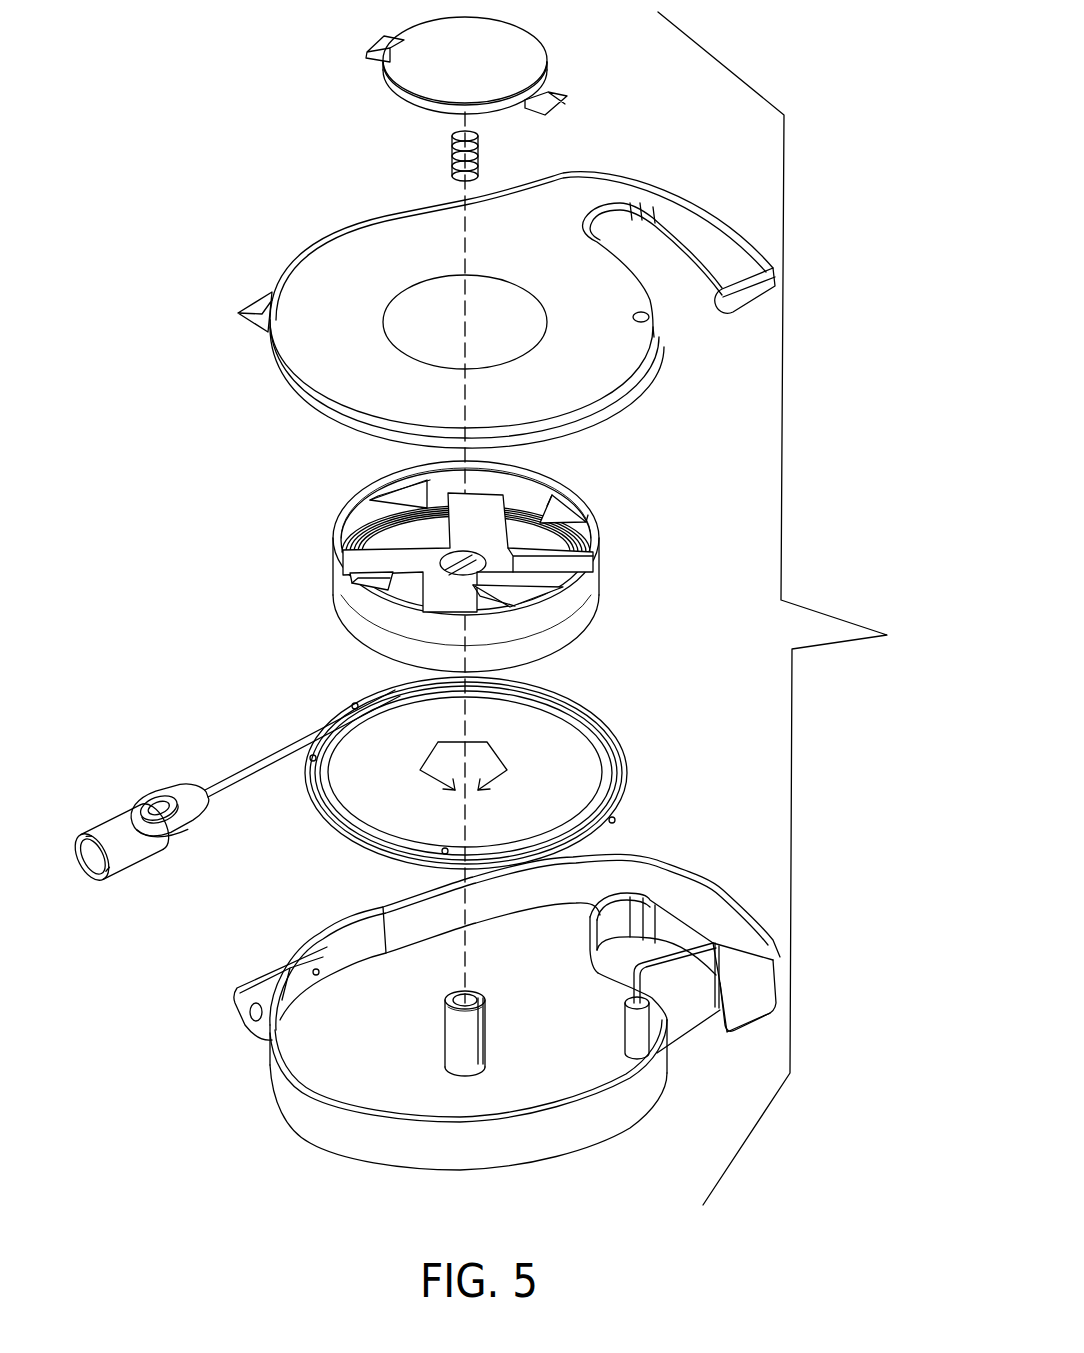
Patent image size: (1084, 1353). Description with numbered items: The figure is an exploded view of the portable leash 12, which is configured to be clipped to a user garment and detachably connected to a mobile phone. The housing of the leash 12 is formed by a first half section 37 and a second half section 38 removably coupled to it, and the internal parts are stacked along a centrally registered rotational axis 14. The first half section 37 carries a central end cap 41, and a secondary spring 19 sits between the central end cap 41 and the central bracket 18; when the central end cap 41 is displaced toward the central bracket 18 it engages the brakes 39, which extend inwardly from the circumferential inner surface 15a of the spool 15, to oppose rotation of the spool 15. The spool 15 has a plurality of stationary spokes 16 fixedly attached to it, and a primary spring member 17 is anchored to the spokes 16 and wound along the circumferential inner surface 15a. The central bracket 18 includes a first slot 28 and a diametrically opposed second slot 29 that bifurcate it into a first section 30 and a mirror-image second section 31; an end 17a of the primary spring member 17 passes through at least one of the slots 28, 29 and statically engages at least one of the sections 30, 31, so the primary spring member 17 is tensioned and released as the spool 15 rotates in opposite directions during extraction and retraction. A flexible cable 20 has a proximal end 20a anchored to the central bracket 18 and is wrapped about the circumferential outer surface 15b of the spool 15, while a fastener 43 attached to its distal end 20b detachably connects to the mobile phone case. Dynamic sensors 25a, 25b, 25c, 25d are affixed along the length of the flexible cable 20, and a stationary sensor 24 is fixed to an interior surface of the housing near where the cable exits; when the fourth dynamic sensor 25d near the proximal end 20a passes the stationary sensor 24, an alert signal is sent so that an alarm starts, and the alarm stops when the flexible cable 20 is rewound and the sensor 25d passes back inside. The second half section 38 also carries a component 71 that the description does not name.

The portable leash 12 is at (795, 608).
The centrally registered rotational axis 14 is at (462, 241).
The spool 15 is at (625, 584).
The circumferential inner surface of the spool 15a is at (525, 487).
The circumferential outer surface of the spool 15b is at (540, 636).
The stationary spokes 16 is at (490, 550).
The primary spring member 17 is at (372, 524).
The end of the primary spring member 17a is at (453, 572).
The central bracket 18 is at (514, 1070).
The secondary spring 19 is at (478, 182).
The flexible cable 20 is at (638, 722).
The proximal end of the flexible cable 20a is at (372, 718).
The distal end of the flexible cable 20b is at (223, 777).
The stationary sensor 24 is at (315, 969).
The dynamic sensor 25a is at (353, 704).
The dynamic sensor 25b is at (614, 820).
The dynamic sensor 25c is at (312, 759).
The fourth dynamic sensor 25d is at (447, 850).
The first slot 28 is at (481, 1036).
The second slot 29 is at (450, 999).
The first section 30 is at (467, 1033).
The second section 31 is at (487, 1004).
The first half section 37 is at (360, 262).
The second half section 38 is at (668, 887).
The brakes 39 is at (415, 501).
The central end cap 41 is at (415, 74).
The fastener 43 is at (131, 763).
The bail wire 71 is at (680, 1030).